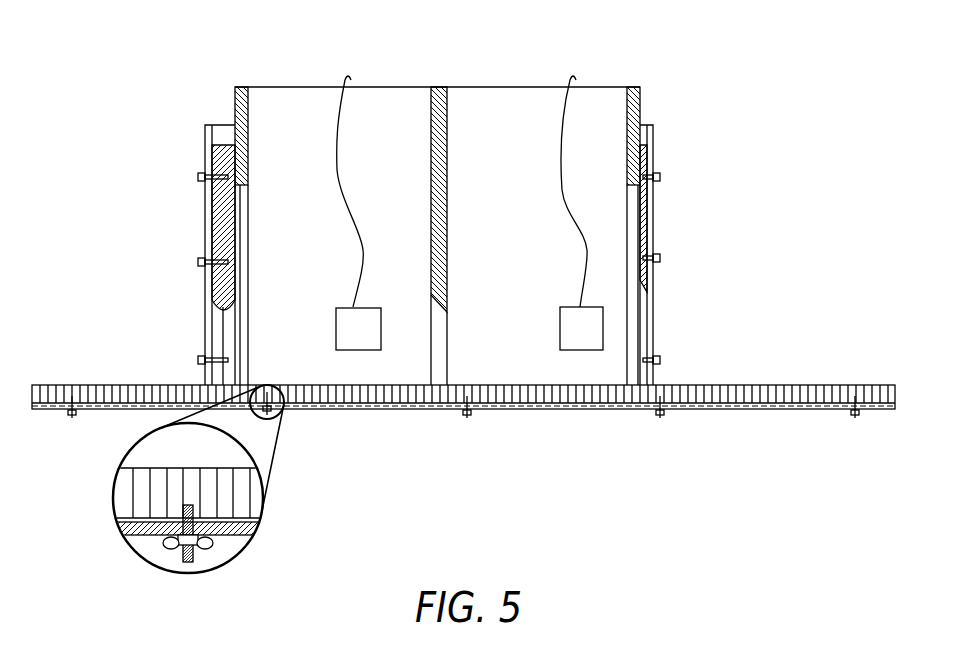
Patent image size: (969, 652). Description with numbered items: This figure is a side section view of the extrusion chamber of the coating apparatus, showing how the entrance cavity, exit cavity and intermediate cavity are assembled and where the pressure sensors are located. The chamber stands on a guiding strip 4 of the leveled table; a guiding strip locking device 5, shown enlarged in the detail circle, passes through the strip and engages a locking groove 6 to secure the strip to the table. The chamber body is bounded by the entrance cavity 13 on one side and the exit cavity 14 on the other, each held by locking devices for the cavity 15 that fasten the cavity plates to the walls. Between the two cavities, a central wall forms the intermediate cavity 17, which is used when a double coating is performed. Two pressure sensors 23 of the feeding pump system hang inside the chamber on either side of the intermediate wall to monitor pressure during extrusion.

The guiding strip 4 is at (800, 383).
The guiding strip locking device 5 is at (180, 545).
The locking groove 6 is at (245, 537).
The entrance cavity 13 is at (218, 218).
The exit cavity 14 is at (652, 205).
The locking device for the cavity 15 is at (200, 262).
The intermediate cavity 17 is at (437, 87).
The pressure sensor 23 is at (355, 332).